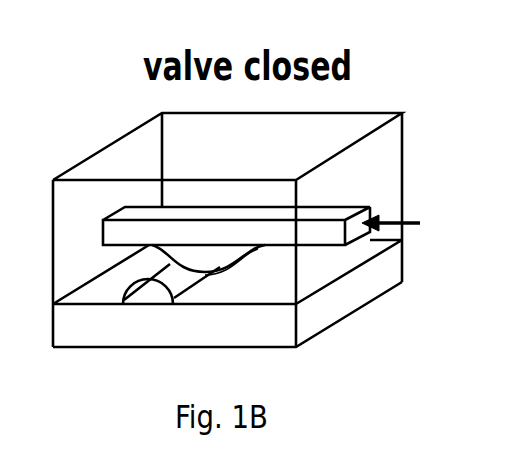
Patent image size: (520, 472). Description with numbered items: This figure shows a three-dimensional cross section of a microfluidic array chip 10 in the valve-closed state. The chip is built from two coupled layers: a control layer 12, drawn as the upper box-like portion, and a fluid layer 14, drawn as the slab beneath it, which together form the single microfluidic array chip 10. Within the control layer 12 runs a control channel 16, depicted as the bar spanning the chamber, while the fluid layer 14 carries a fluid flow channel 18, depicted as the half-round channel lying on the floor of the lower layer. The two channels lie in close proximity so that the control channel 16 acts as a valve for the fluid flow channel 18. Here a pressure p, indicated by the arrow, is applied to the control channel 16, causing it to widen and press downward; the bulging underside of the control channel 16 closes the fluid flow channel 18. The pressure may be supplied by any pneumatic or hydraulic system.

The microfluidic array chip 10 is at (388, 90).
The control layer 12 is at (403, 148).
The fluid layer 14 is at (403, 262).
The control channel 16 is at (330, 230).
The fluid flow channel 18 is at (177, 288).